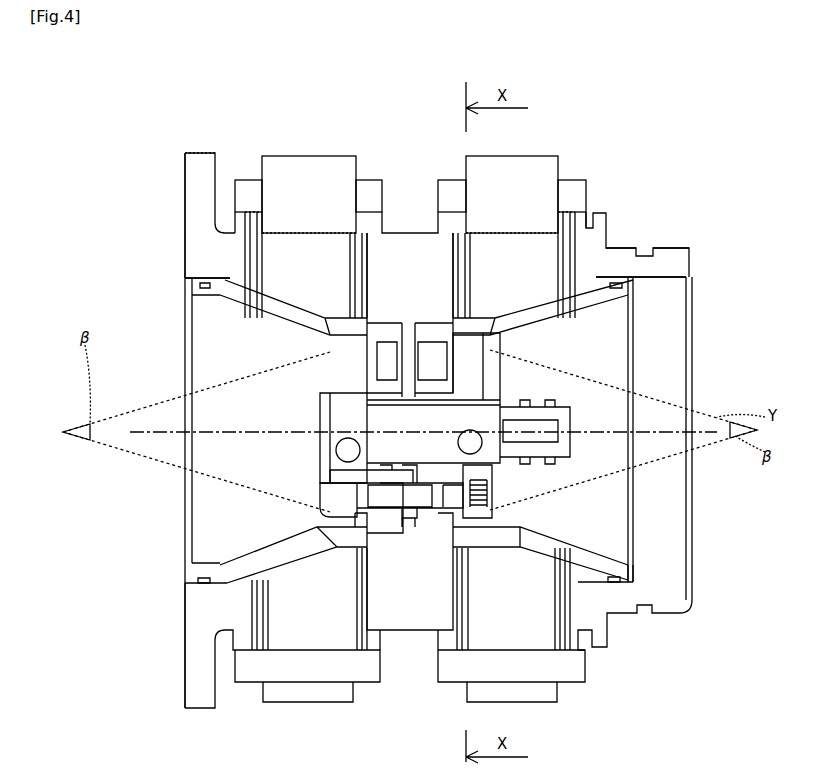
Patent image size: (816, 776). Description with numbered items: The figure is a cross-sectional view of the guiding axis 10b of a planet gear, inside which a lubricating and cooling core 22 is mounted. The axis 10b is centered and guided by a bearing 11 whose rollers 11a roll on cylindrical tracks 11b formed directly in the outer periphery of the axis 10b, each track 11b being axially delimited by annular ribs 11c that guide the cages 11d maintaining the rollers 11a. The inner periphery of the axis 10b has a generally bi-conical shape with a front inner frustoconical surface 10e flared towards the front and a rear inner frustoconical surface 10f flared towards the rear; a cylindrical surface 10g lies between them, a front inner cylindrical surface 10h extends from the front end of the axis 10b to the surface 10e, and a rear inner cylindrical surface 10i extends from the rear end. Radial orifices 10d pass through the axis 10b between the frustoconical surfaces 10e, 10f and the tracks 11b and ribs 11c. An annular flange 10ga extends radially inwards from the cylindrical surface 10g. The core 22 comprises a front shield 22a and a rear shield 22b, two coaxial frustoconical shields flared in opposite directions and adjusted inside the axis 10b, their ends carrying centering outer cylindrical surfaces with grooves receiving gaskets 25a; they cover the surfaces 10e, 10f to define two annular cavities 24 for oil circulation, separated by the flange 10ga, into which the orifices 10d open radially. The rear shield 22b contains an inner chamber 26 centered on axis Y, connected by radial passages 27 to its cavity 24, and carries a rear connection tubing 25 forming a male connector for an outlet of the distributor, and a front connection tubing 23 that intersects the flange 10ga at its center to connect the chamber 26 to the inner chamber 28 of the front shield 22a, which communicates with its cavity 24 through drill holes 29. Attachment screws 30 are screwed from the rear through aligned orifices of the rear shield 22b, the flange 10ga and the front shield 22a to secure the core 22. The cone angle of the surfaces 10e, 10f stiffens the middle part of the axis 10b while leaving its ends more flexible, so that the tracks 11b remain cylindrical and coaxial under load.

The bearing 11 is at (613, 167).
The roller 11a is at (280, 170).
The cylindrical track 11b is at (302, 233).
The annular rib 11c is at (243, 240).
The cage 11d is at (242, 193).
The orifice 10d is at (333, 265).
The axis 10b is at (665, 262).
The front inner cylindrical surface 10h is at (215, 283).
The rear inner cylindrical surface 10i is at (627, 283).
The front inner frustoconical surface 10e is at (300, 332).
The rear inner frustoconical surface 10f is at (560, 343).
The cylindrical surface 10g is at (395, 313).
The annular flange 10ga is at (413, 520).
The drill hole 29 is at (330, 345).
The radial passage 27 is at (500, 358).
The connection tubing 25 is at (490, 415).
The inner chamber 26 is at (500, 470).
The inner chamber 28 is at (336, 450).
The connection tubing 23 is at (330, 475).
The attachment screw 30 is at (478, 520).
The lubricating and cooling core 22 is at (615, 548).
The front shield 22a is at (253, 528).
The rear shield 22b is at (570, 547).
The annular cavity 24 is at (313, 560).
The gasket 25a is at (203, 588).